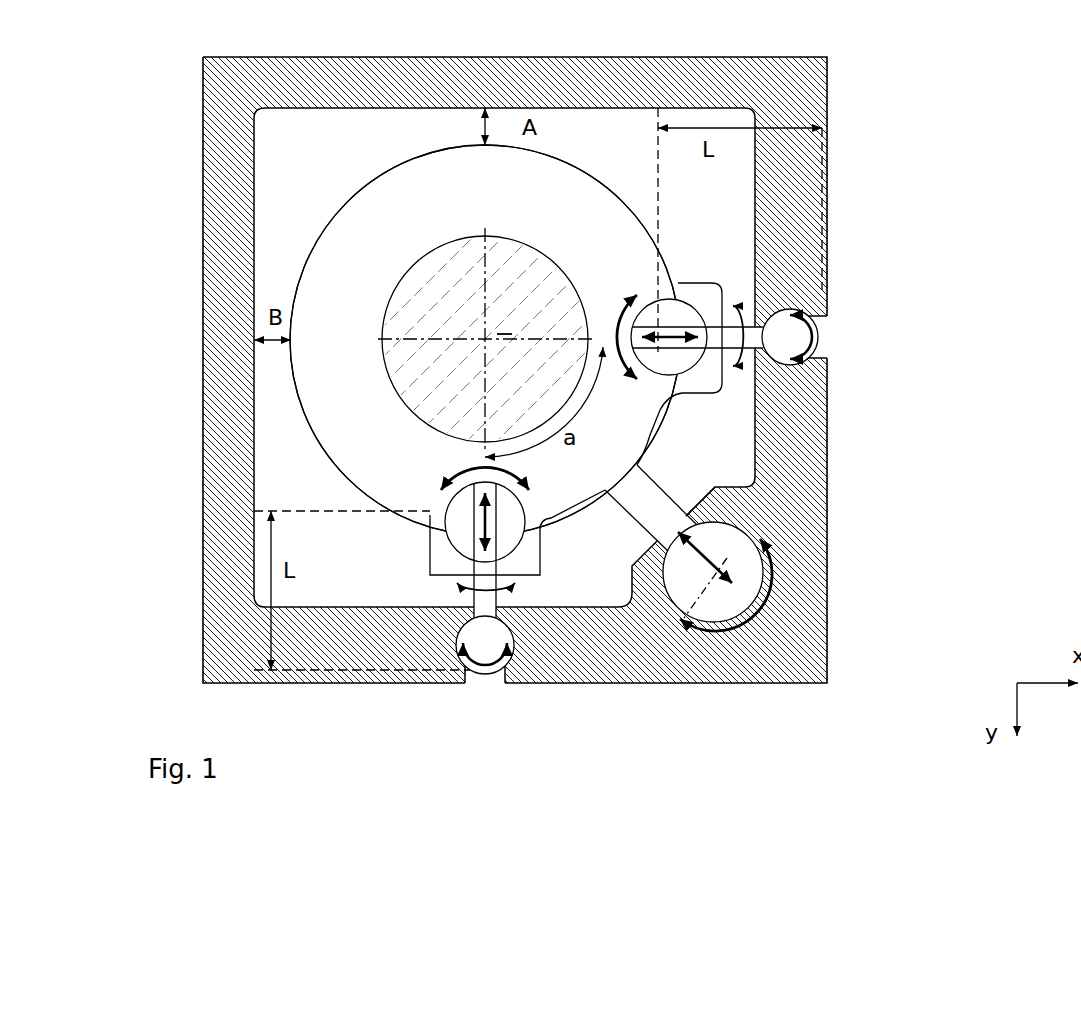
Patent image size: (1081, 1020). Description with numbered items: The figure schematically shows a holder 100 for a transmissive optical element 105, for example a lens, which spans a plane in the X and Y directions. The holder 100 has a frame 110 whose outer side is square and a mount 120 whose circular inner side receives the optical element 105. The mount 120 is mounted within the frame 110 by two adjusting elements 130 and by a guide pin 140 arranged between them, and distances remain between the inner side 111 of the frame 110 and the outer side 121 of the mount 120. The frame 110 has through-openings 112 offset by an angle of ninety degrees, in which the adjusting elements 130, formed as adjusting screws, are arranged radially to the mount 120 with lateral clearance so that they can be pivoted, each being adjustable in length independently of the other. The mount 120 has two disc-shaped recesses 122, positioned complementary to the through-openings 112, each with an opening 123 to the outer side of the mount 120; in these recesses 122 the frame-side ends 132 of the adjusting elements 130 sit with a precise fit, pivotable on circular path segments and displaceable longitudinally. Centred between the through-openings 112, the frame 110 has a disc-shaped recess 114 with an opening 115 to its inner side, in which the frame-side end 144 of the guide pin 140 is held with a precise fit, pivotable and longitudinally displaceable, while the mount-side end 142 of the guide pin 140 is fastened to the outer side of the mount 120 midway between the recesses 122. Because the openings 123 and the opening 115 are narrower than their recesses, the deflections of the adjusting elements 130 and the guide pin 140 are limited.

The holder 100 is at (461, 433).
The transmissive optical element 105 is at (537, 290).
The frame 110 is at (203, 212).
The inner side of the frame 111 is at (254, 157).
The through-openings 112 is at (836, 325).
The recess 114 is at (758, 564).
The opening 115 is at (696, 515).
The mount 120 is at (317, 392).
The outer side of the mount 121 is at (292, 363).
The recesses 122 is at (681, 312).
The openings 123 is at (721, 320).
The adjusting elements 130 is at (822, 340).
The frame-side end 132 is at (434, 536).
The guide pin 140 is at (652, 502).
The mount-side end 142 is at (650, 465).
The frame-side end 144 is at (690, 626).